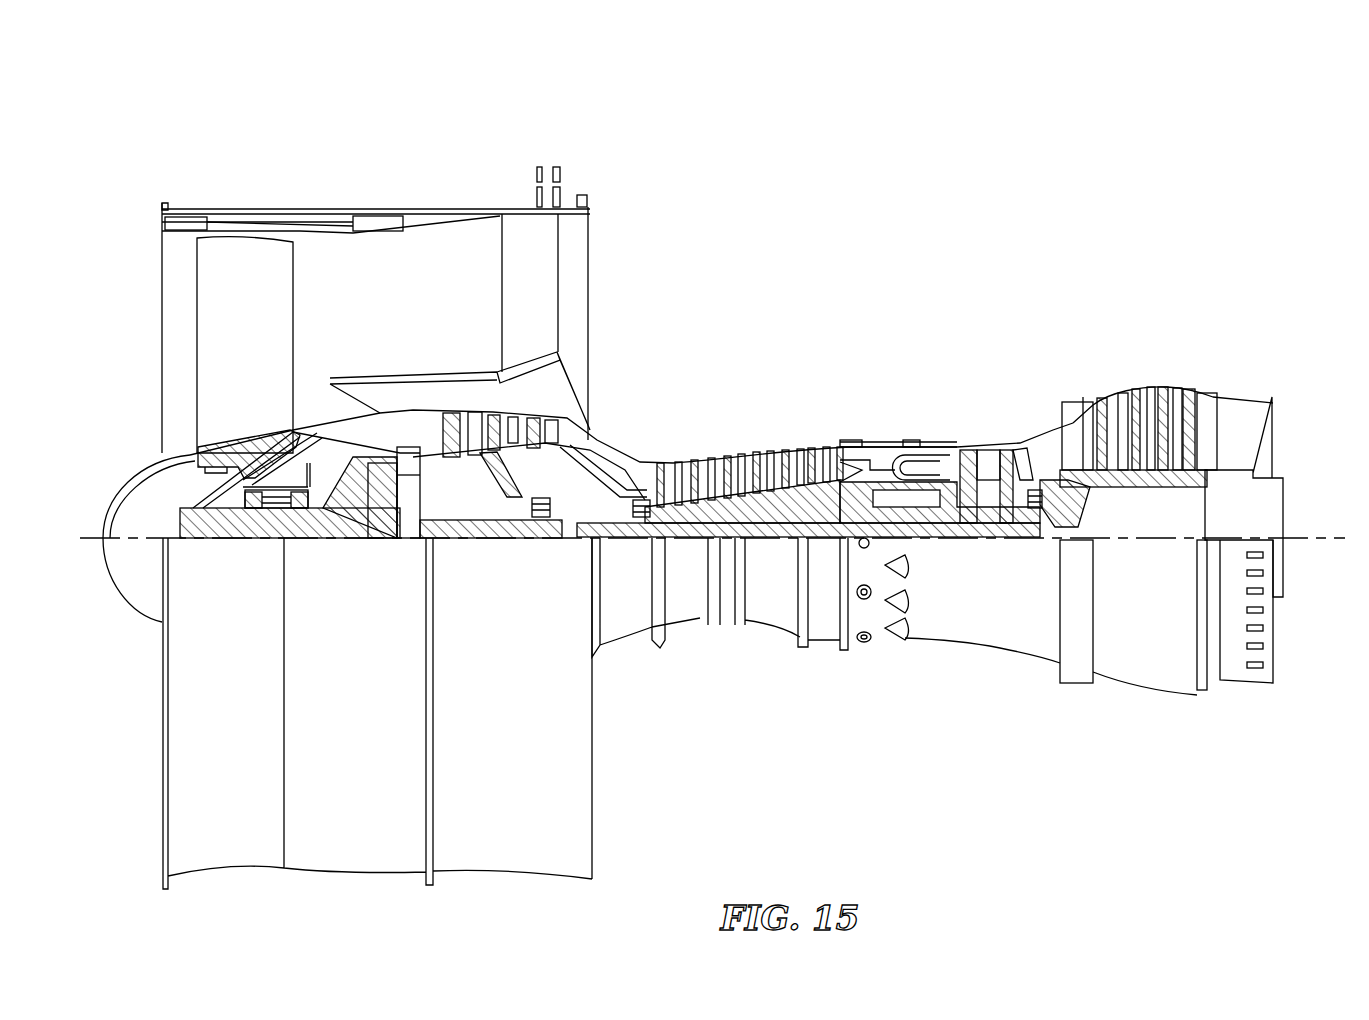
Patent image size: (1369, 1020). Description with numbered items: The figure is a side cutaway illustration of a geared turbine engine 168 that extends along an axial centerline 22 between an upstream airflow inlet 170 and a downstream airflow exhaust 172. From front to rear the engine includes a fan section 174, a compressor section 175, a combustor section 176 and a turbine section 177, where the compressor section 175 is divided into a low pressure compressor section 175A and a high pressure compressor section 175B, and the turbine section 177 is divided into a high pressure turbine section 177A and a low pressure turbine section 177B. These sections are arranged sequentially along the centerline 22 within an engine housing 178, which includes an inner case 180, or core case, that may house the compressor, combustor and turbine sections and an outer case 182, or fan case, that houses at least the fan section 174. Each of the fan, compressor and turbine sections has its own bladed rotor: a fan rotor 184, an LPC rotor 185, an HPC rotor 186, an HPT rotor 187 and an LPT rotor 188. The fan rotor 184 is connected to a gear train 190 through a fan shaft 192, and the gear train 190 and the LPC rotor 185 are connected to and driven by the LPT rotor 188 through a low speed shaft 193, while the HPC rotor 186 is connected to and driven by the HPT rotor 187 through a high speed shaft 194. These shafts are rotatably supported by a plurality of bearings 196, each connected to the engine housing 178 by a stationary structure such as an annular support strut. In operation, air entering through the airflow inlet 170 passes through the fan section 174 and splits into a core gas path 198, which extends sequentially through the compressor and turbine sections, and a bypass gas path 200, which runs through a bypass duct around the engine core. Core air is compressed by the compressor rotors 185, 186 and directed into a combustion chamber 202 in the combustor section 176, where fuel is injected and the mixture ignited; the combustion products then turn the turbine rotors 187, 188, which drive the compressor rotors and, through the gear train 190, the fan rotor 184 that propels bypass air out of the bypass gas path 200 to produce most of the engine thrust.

The axial centerline 22 is at (1340, 548).
The geared turbine engine 168 is at (130, 188).
The upstream airflow inlet 170 is at (162, 284).
The downstream airflow exhaust 172 is at (1270, 432).
The fan section 174 is at (165, 184).
The compressor section 175 is at (418, 120).
The low pressure compressor (LPC) section 175A is at (418, 168).
The high pressure compressor (HPC) section 175B is at (620, 374).
The combustor section 176 is at (845, 374).
The turbine section 177 is at (960, 298).
The high pressure turbine (HPT) section 177A is at (1040, 374).
The low pressure turbine (LPT) section 177B is at (1055, 374).
The engine housing 178 is at (620, 668).
The inner case 180 is at (823, 642).
The outer case 182 is at (545, 880).
The fan rotor 184 is at (192, 462).
The LPC rotor 185 is at (490, 487).
The HPC rotor 186 is at (773, 540).
The HPT rotor 187 is at (993, 513).
The LPT rotor 188 is at (1137, 480).
The gear train 190 is at (381, 540).
The fan shaft 192 is at (235, 540).
The low speed shaft 193 is at (1150, 540).
The high speed shaft 194 is at (925, 522).
The bearings 196 is at (295, 512).
The core gas path 198 is at (616, 455).
The bypass gas path 200 is at (385, 312).
The combustion chamber 202 is at (907, 468).